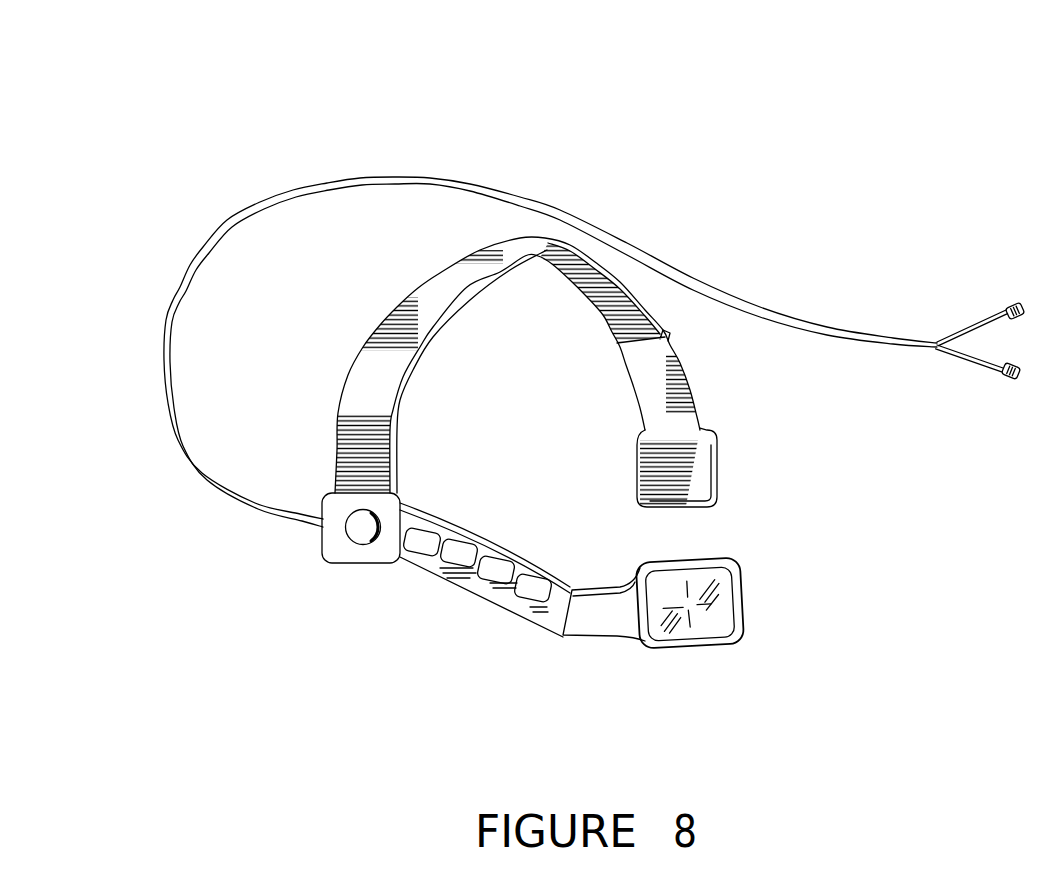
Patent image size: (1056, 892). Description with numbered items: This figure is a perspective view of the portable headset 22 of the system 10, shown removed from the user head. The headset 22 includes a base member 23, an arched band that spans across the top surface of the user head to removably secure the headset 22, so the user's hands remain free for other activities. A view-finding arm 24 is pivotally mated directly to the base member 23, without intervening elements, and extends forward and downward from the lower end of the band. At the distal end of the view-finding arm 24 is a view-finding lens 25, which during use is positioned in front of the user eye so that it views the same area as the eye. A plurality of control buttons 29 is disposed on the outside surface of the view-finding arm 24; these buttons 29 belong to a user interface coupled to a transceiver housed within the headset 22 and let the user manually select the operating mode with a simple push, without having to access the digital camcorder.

The system 10 is at (1008, 108).
The portable headset 22 is at (357, 373).
The base member 23 is at (447, 283).
The view-finding arm 24 is at (553, 622).
The view-finding lens 25 is at (718, 624).
The control buttons 29 is at (517, 597).